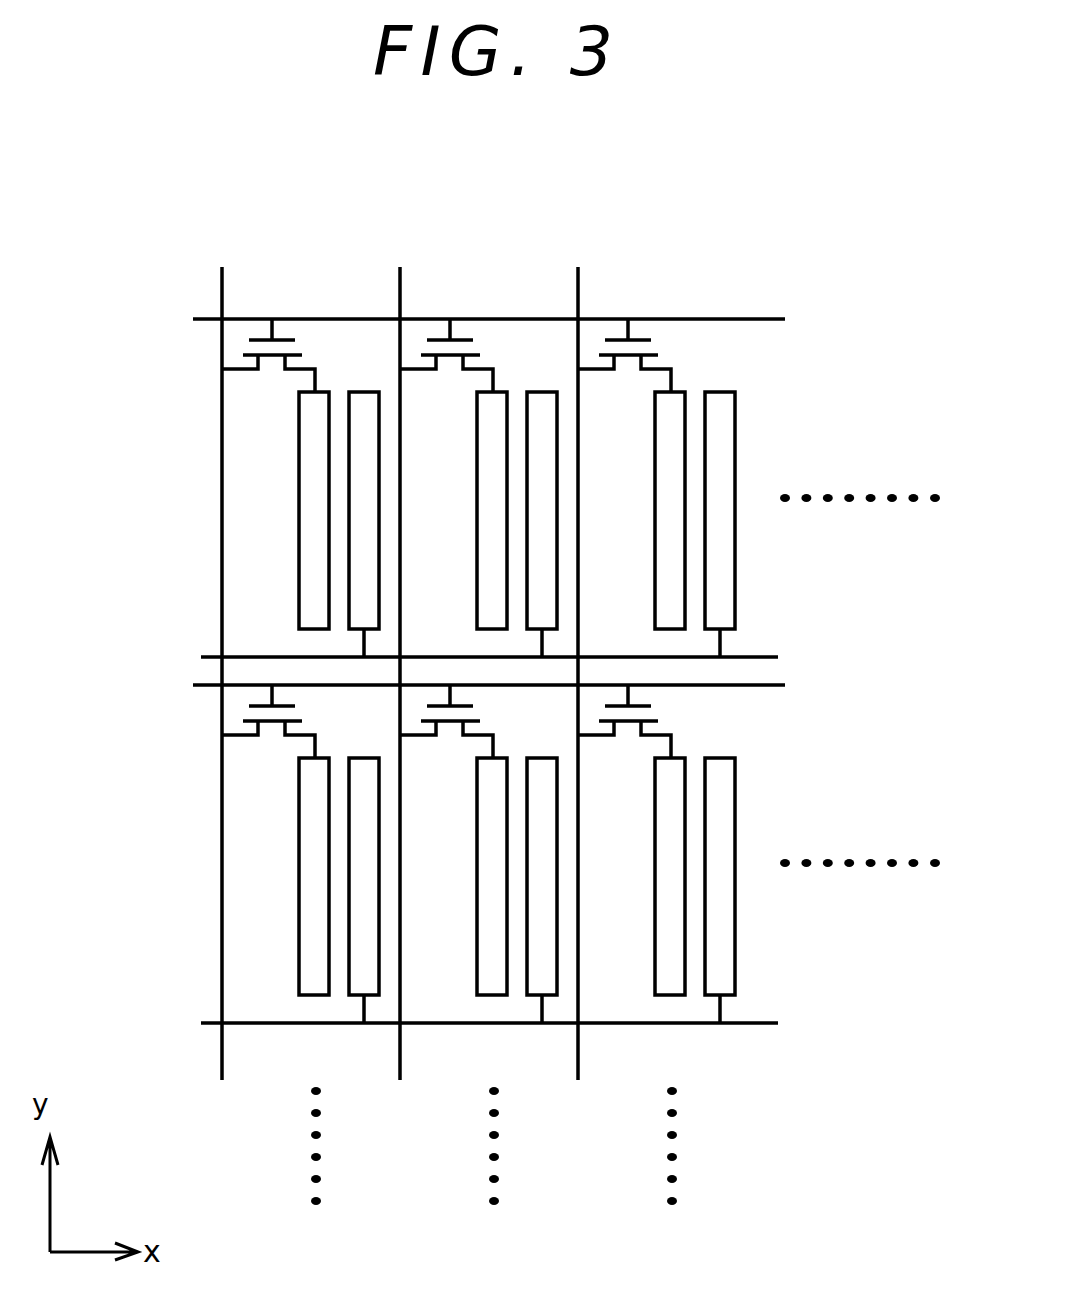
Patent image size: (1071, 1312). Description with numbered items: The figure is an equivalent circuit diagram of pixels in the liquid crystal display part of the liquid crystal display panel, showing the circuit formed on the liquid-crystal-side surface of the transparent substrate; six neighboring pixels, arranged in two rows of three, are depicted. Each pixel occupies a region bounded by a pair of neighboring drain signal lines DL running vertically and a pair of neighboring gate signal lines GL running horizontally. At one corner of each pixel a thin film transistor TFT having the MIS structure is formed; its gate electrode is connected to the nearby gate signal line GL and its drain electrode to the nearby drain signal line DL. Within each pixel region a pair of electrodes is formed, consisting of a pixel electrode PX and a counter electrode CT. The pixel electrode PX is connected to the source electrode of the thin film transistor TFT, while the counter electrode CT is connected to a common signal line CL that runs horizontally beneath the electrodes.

The thin film transistor TFT is at (304, 340).
The drain signal line DL is at (400, 290).
The gate signal line GL is at (758, 318).
The pixel electrode PX is at (303, 445).
The counter electrode CT is at (360, 527).
The common signal line CL is at (755, 655).